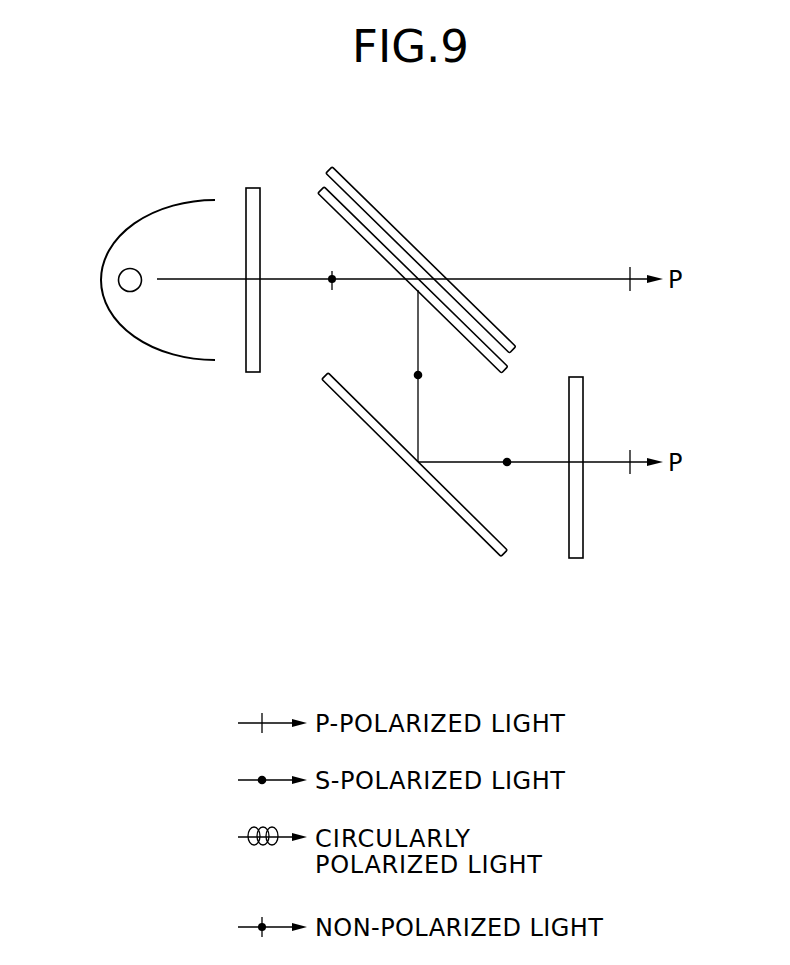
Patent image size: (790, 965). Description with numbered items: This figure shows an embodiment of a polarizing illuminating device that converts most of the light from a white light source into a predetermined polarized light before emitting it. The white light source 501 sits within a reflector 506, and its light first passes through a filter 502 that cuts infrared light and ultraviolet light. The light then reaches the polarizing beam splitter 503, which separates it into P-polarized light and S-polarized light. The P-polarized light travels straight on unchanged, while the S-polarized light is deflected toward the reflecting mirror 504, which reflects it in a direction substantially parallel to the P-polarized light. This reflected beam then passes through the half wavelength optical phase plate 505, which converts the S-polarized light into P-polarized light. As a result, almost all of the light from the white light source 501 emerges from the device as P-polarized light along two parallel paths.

The white light source 501 is at (128, 291).
The filter 502 is at (253, 188).
The polarizing beam splitter 503 is at (302, 180).
The reflecting mirror 504 is at (365, 423).
The half wavelength optical phase plate 505 is at (573, 558).
The reflector 506 is at (152, 210).